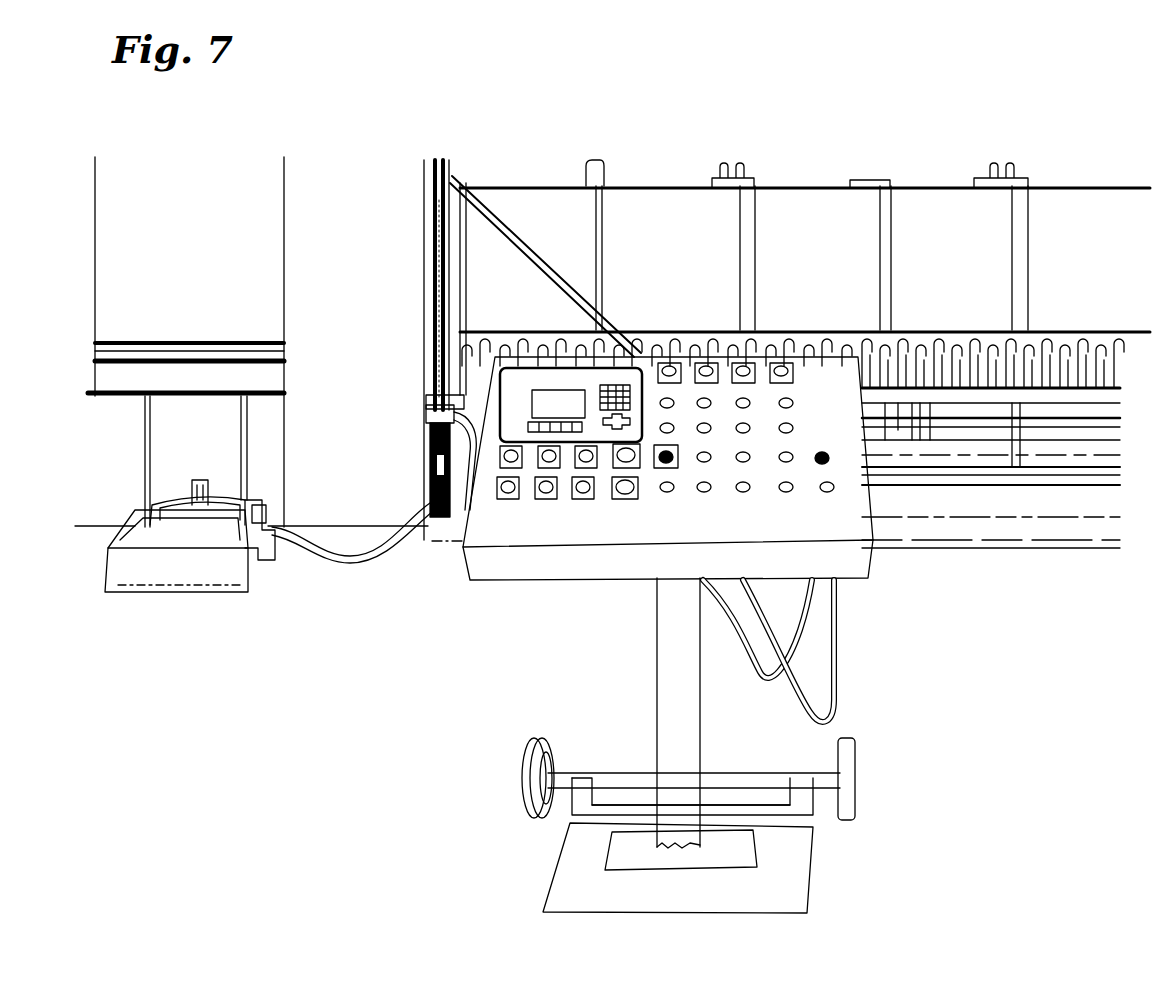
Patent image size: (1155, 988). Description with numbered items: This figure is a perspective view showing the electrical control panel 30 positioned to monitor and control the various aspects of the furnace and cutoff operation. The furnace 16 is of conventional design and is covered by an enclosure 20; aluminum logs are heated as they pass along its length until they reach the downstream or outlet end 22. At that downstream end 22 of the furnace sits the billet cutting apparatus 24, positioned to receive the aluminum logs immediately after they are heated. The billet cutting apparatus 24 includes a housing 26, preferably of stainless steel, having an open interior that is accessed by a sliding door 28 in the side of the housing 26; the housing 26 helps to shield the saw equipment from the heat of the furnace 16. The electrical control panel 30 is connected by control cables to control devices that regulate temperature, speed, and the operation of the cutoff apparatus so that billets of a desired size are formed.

The furnace 16 is at (937, 244).
The enclosure 20 is at (800, 277).
The downstream or outlet end 22 is at (445, 238).
The billet cutting apparatus 24 is at (337, 462).
The housing 26 is at (380, 350).
The sliding door 28 is at (186, 342).
The electrical control panel 30 is at (843, 518).